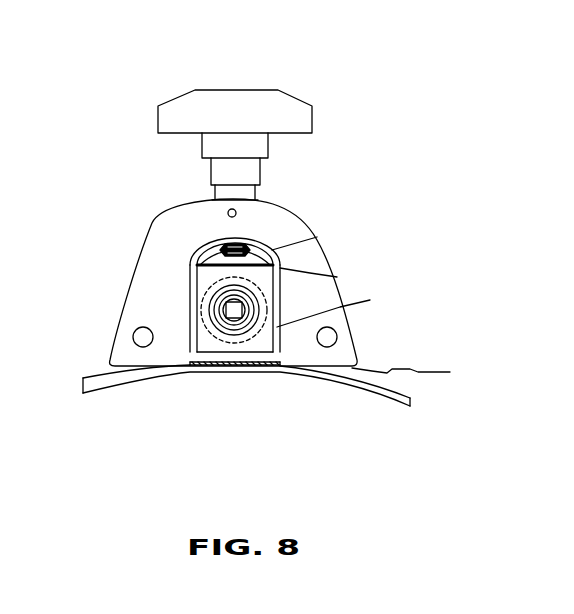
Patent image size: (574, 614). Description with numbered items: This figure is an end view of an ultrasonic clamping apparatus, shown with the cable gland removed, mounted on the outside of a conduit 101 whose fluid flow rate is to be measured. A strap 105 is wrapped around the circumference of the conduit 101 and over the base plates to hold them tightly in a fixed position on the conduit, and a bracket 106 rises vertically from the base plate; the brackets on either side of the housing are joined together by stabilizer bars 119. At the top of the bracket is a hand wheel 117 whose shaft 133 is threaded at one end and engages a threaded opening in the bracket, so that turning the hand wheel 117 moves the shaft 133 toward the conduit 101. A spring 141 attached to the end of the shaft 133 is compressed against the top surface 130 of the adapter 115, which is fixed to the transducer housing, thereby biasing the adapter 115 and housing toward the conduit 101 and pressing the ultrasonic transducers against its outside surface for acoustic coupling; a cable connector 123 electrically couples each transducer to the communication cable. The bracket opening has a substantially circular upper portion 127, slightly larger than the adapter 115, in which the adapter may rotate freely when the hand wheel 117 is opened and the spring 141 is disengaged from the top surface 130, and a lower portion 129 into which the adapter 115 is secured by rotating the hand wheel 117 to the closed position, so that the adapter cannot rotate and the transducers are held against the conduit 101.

The hand wheel 117 is at (235, 90).
The shaft 133 is at (243, 192).
The housing 106 is at (300, 209).
The top surface 130 is at (203, 248).
The spring 141 is at (318, 237).
The upper portion 127 is at (337, 277).
The lower portion 129 is at (370, 300).
The adapter 115 is at (257, 348).
The cable connector 123 is at (230, 326).
The stabilizer bar 119 is at (137, 325).
The strap 105 is at (450, 372).
The conduit 101 is at (413, 393).